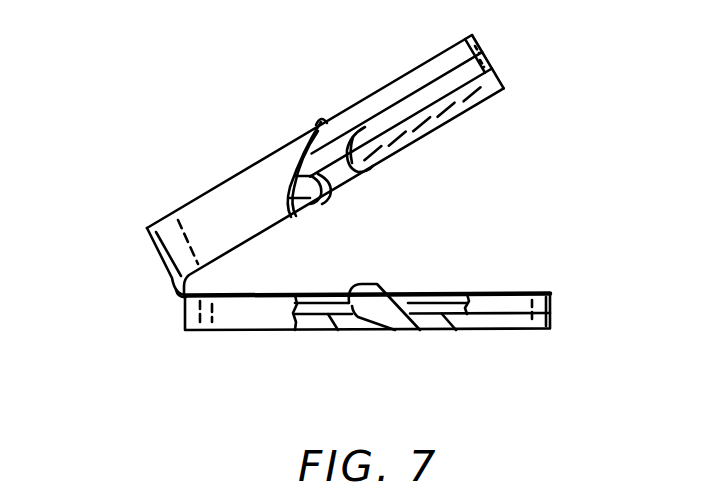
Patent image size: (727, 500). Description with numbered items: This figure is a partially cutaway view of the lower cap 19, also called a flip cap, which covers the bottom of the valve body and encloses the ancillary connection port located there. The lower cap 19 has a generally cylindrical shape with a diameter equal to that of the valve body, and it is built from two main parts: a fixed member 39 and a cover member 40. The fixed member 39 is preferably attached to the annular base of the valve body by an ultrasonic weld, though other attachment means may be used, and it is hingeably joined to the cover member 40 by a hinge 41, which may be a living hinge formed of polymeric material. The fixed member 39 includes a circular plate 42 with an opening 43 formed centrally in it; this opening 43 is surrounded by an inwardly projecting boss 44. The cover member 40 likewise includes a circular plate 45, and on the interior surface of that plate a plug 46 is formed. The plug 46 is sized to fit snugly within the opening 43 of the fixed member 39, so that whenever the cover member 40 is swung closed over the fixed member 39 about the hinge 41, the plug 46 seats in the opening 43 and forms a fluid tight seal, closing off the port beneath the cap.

The lower cap 19 is at (230, 157).
The fixed member 39 is at (488, 59).
The cover member 40 is at (553, 310).
The hinge 41 is at (174, 295).
The circular plate 42 is at (451, 116).
The opening 43 is at (330, 190).
The inwardly projecting boss 44 is at (365, 125).
The circular plate 45 is at (440, 318).
The plug 46 is at (402, 290).